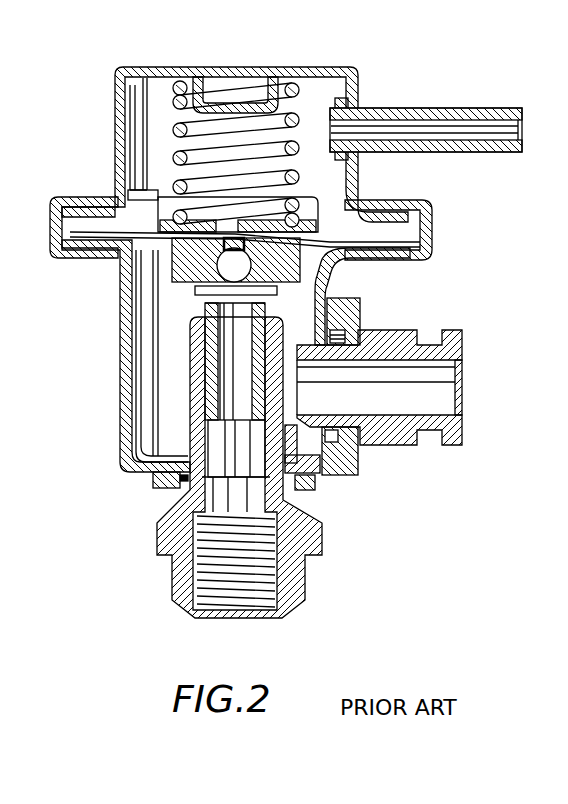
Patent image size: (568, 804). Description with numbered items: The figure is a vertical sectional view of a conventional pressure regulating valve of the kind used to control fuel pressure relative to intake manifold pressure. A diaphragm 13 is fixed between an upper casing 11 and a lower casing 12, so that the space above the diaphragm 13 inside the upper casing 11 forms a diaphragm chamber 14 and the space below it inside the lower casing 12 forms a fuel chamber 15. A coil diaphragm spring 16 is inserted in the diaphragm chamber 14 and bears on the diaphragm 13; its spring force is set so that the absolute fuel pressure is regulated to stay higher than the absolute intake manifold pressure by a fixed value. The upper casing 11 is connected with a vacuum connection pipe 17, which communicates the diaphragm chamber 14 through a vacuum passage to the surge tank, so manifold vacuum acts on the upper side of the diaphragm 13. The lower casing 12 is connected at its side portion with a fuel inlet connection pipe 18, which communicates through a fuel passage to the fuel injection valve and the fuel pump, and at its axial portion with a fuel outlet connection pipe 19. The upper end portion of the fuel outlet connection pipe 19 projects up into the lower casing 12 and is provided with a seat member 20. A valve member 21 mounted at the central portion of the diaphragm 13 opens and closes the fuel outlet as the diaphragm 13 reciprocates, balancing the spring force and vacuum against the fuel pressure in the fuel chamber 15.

The upper casing 11 is at (118, 97).
The lower casing 12 is at (122, 332).
The diaphragm 13 is at (153, 243).
The diaphragm chamber 14 is at (140, 143).
The fuel chamber 15 is at (150, 379).
The diaphragm spring 16 is at (162, 86).
The vacuum connection pipe 17 is at (431, 107).
The fuel inlet connection pipe 18 is at (443, 330).
The fuel outlet connection pipe 19 is at (305, 585).
The seat member 20 is at (283, 316).
The valve member 21 is at (245, 291).